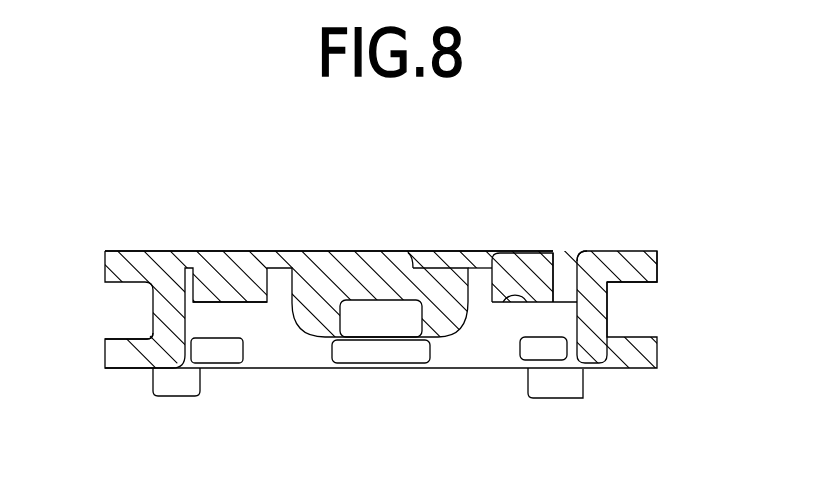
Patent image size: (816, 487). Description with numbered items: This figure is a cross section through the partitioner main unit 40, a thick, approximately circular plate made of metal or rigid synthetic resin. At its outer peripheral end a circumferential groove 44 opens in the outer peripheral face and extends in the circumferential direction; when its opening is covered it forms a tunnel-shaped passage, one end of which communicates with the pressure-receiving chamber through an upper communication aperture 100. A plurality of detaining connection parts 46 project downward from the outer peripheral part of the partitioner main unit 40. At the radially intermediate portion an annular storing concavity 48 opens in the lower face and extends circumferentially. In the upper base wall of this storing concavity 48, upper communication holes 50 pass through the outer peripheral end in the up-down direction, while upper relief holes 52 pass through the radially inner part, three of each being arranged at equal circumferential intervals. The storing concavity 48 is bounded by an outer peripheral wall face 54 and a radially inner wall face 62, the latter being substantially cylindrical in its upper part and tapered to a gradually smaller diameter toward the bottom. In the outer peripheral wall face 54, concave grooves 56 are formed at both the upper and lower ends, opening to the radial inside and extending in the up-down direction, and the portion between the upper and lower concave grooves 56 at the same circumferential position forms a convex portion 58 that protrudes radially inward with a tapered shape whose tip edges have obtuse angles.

The partitioner main unit 40 is at (684, 232).
The circumferential groove 44 is at (123, 338).
The detaining connection parts 46 is at (172, 385).
The storing concavity 48 is at (246, 288).
The upper communication holes 50 is at (557, 264).
The upper relief holes 52 is at (494, 264).
The outer peripheral wall face 54 is at (578, 312).
The concave grooves 56 is at (230, 304).
The convex portion 58 is at (230, 323).
The radially inner wall face 62 is at (463, 330).
The upper communication aperture 100 is at (621, 264).